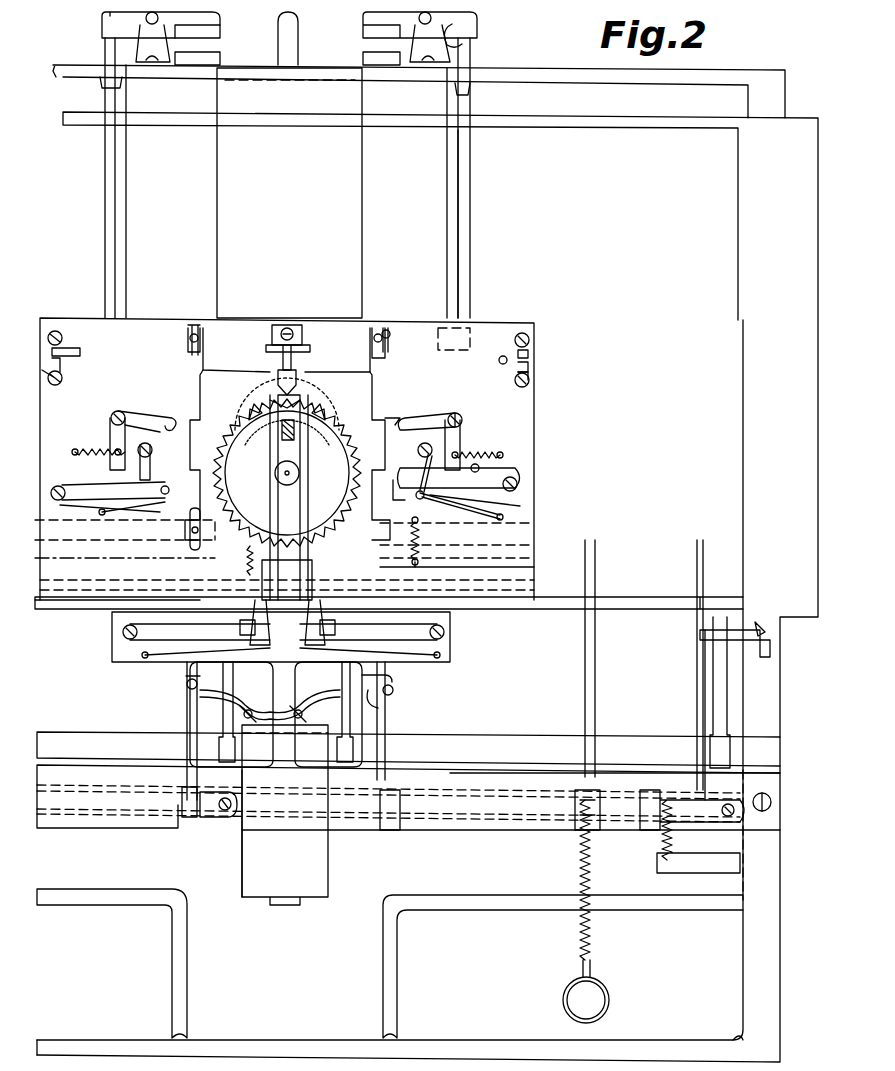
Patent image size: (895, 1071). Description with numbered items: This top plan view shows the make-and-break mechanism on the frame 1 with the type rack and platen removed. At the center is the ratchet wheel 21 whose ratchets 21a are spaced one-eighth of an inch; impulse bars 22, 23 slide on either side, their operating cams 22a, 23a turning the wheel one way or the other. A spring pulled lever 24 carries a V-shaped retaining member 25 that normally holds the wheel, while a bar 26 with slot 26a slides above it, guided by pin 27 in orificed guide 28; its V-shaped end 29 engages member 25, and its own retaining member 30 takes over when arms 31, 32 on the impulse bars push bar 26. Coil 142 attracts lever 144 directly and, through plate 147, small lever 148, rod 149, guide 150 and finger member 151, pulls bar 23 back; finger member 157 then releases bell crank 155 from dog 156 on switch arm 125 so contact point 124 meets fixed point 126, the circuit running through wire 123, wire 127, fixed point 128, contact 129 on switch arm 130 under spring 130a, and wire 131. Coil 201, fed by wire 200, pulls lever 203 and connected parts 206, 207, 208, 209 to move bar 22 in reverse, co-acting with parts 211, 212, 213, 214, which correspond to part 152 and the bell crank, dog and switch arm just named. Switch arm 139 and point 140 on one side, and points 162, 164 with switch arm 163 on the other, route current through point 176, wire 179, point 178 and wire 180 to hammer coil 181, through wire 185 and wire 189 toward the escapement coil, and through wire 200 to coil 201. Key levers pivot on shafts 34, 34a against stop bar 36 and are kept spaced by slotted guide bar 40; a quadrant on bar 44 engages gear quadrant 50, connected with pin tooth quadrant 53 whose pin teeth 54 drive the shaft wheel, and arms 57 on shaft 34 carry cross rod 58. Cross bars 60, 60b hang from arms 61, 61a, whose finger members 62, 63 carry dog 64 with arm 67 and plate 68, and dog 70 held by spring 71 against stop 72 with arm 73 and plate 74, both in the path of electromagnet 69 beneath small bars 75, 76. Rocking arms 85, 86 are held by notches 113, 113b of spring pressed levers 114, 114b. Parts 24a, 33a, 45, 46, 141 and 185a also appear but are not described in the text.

The frame 1 is at (478, 1050).
The ratchet wheel 21 is at (325, 420).
The ratchets 21a is at (312, 403).
The impulse bar 22 is at (192, 388).
The operating cam 22a is at (230, 414).
The impulse bar 23 is at (382, 395).
The operating cam 23a is at (385, 418).
The spring pulled lever 24 is at (460, 575).
The spring 24a is at (422, 541).
The V-shaped retaining member 25 is at (262, 566).
The bar 26 is at (272, 405).
The slot 26a is at (270, 400).
The projecting pin 27 is at (279, 322).
The orificed guide 28 is at (278, 350).
The V-shaped end 29 is at (262, 498).
The V-shaped retaining member 30 is at (298, 380).
The projecting arm 31 is at (220, 372).
The projecting arm 32 is at (352, 372).
The pull ring spring 33a is at (592, 942).
The shaft 34 is at (182, 828).
The shaft 34a is at (500, 830).
The stop bar 36 is at (130, 828).
The slotted guide bar 40 is at (68, 540).
The bar 44 is at (120, 580).
The housing 45 is at (230, 672).
The cross bar 46 is at (110, 733).
The gear quadrant 50 is at (245, 548).
The pin tooth quadrant 53 is at (256, 448).
The pin teeth 54 is at (250, 458).
The projecting arms 57 is at (700, 683).
The cross rod 58 is at (640, 595).
The cross bars 60 is at (90, 790).
The cross bar 60b is at (485, 790).
The arms 61 is at (208, 828).
The arms 61a is at (392, 830).
The finger member 62 is at (187, 712).
The finger member 63 is at (386, 728).
The dog 64 is at (190, 686).
The arm 67 is at (243, 700).
The plate 68 is at (262, 725).
The electromagnet 69 is at (328, 852).
The dog 70 is at (392, 688).
The spring 71 is at (378, 706).
The stop member 72 is at (388, 680).
The projecting arm 73 is at (310, 705).
The plate 74 is at (303, 714).
The small bar 75 is at (195, 665).
The small bar 76 is at (355, 668).
The rocking arm 85 is at (225, 620).
The rocking arm 86 is at (350, 621).
The notch 113 is at (258, 640).
The notch 113b is at (312, 640).
The spring pressed lever 114 is at (128, 660).
The spring pressed lever 114b is at (450, 655).
The wire 123 is at (440, 500).
The contact point 124 is at (440, 497).
The switch arm 125 is at (500, 485).
The fixed contact point 126 is at (408, 490).
The wire 127 is at (455, 425).
The fixed contact point 128 is at (150, 460).
The contact 129 is at (175, 488).
The switch arm 130 is at (75, 506).
The spring 130a is at (106, 516).
The wire 131 is at (122, 516).
The switch arm 139 is at (90, 344).
The point 140 is at (110, 362).
The housing 141 is at (45, 322).
The electromagnet 142 is at (452, 188).
The lever 144 is at (390, 344).
The plate 147 is at (365, 35).
The small lever 148 is at (466, 40).
The rod 149 is at (470, 210).
The guide 150 is at (476, 92).
The finger member 151 is at (437, 328).
The part 152 is at (405, 470).
The bell crank 155 is at (462, 440).
The dog 156 is at (470, 476).
The finger member 157 is at (440, 420).
The point 162 is at (508, 360).
The switch arm 163 is at (530, 366).
The point 164 is at (518, 352).
The point 176 is at (518, 375).
The point 178 is at (62, 364).
The wire 179 is at (536, 384).
The wire 180 is at (45, 380).
The hammer operating coil 181 is at (355, 212).
The wire 185 is at (770, 624).
The link 185a is at (520, 504).
The wire 189 is at (762, 650).
The wire 200 is at (532, 340).
The power coil 201 is at (128, 182).
The lever 203 is at (188, 336).
The connected part 206 is at (210, 32).
The connected part 207 is at (130, 14).
The connected part 208 is at (106, 132).
The connected part 209 is at (103, 87).
The part 211 is at (188, 520).
The bell crank 212 is at (108, 432).
The dog 213 is at (72, 452).
The switch arm 214 is at (168, 428).